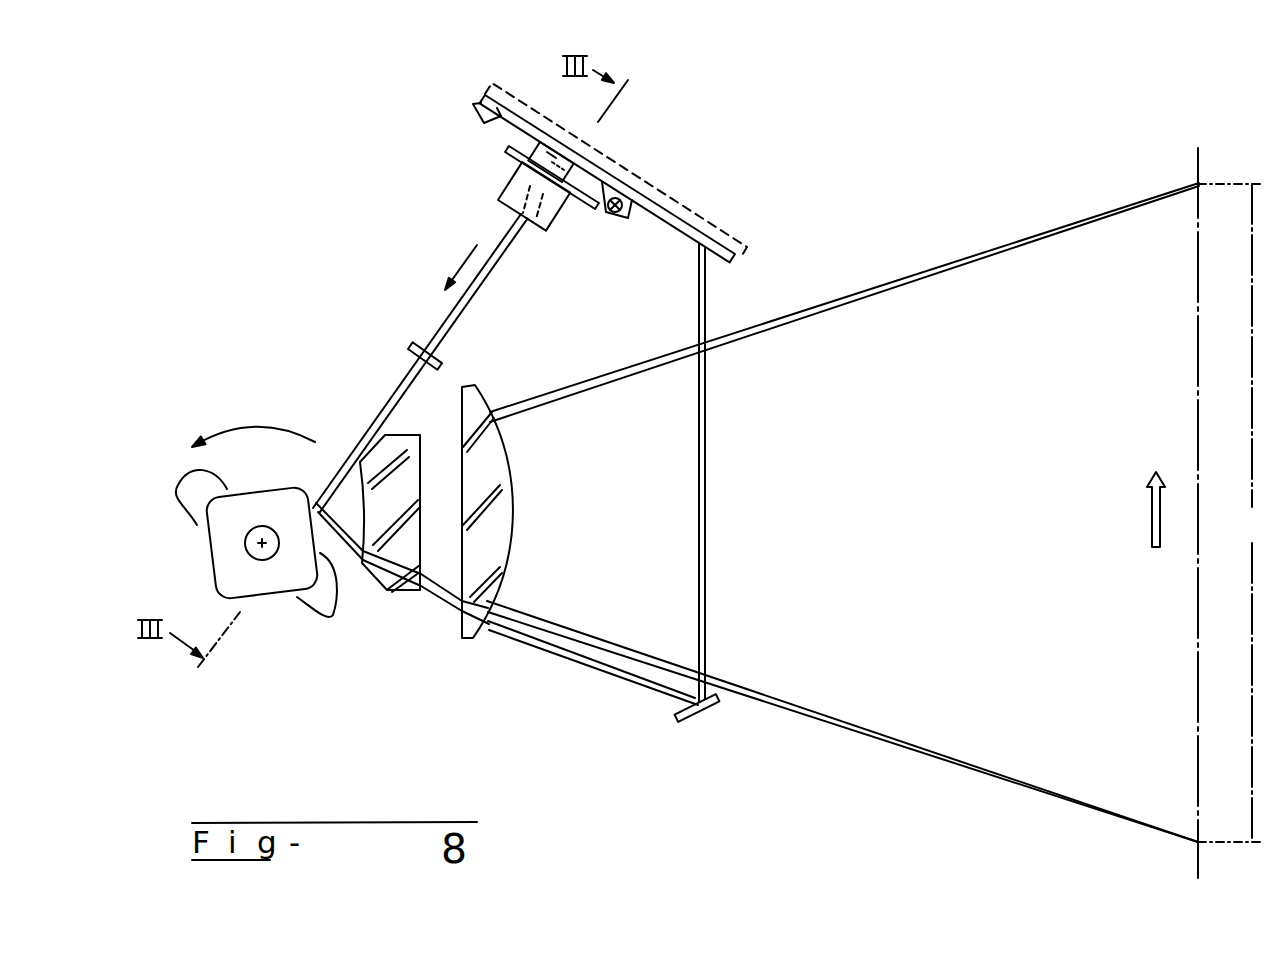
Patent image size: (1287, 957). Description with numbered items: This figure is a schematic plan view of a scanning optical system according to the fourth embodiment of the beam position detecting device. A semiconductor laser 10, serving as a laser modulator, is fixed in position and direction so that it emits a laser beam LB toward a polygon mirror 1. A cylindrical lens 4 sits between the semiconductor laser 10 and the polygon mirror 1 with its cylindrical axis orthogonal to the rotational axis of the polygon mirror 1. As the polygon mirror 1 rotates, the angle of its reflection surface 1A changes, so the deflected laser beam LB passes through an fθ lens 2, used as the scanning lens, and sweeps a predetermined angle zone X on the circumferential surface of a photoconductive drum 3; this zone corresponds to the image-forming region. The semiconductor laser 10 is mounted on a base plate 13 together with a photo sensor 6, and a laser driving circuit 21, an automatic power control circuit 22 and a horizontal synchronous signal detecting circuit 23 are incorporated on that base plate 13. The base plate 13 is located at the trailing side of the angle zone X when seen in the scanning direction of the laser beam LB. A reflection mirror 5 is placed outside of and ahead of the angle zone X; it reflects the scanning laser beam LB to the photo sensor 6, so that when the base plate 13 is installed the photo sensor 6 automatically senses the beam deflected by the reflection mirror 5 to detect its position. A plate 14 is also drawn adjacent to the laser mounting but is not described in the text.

The polygon mirror 1 is at (213, 556).
The reflection surface 1A is at (249, 562).
The fθ lens 2 is at (488, 672).
The photoconductive drum 3 is at (1198, 278).
The cylindrical lens 4 is at (412, 350).
The reflection mirror 5 is at (690, 723).
The photo sensor 6 is at (699, 244).
The semiconductor laser 10 is at (503, 162).
The base plate 13 is at (505, 120).
The mounting plate 14 is at (580, 206).
The laser driving circuit 21 is at (654, 170).
The automatic power control circuit 22 is at (654, 170).
The horizontal synchronous signal detecting circuit 23 is at (683, 203).
The laser beam LB is at (482, 283).
The predetermined angle zone X is at (1230, 513).